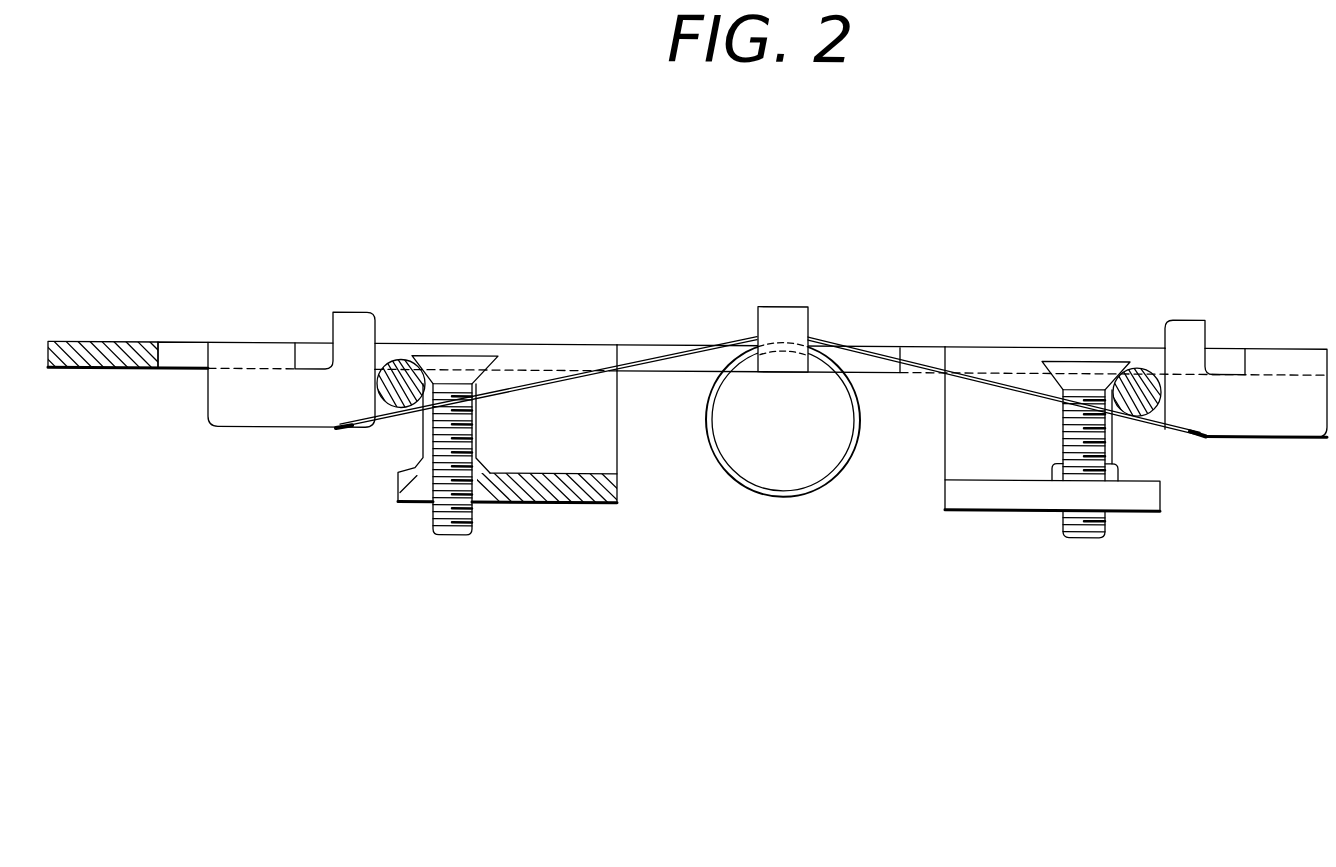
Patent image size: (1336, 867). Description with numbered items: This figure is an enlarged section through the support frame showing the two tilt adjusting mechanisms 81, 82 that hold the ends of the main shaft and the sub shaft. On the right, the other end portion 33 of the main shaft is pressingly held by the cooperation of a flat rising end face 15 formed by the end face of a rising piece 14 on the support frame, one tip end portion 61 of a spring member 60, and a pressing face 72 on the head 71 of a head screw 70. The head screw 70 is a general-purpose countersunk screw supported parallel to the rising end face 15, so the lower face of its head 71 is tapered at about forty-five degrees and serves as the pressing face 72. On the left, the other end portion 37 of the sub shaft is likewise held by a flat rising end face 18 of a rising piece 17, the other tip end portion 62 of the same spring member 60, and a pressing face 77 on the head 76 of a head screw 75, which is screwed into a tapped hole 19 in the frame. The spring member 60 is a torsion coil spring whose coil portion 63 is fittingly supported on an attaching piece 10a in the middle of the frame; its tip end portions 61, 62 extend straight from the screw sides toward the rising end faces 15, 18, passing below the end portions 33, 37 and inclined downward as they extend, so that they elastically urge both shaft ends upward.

The attaching piece 10a is at (784, 357).
The rising piece 14 is at (1192, 310).
The rising end face 15 is at (1152, 346).
The rising piece 17 is at (347, 310).
The rising end face 18 is at (385, 343).
The tapped hole 19 is at (435, 522).
The other end portion of the main shaft 33 is at (1153, 340).
The other end portion of the sub shaft 37 is at (395, 343).
The spring member 60 is at (828, 328).
The tip end portion 61 is at (1148, 423).
The other tip end portion 62 is at (388, 423).
The coil portion 63 is at (775, 493).
The head screw 70 is at (1057, 527).
The head 71 is at (1077, 341).
The pressing face 72 is at (1027, 341).
The head screw 75 is at (487, 517).
The head 76 is at (455, 343).
The pressing face 77 is at (515, 343).
The tilt adjusting mechanism 81 is at (1048, 282).
The tilt adjusting mechanism 82 is at (489, 294).